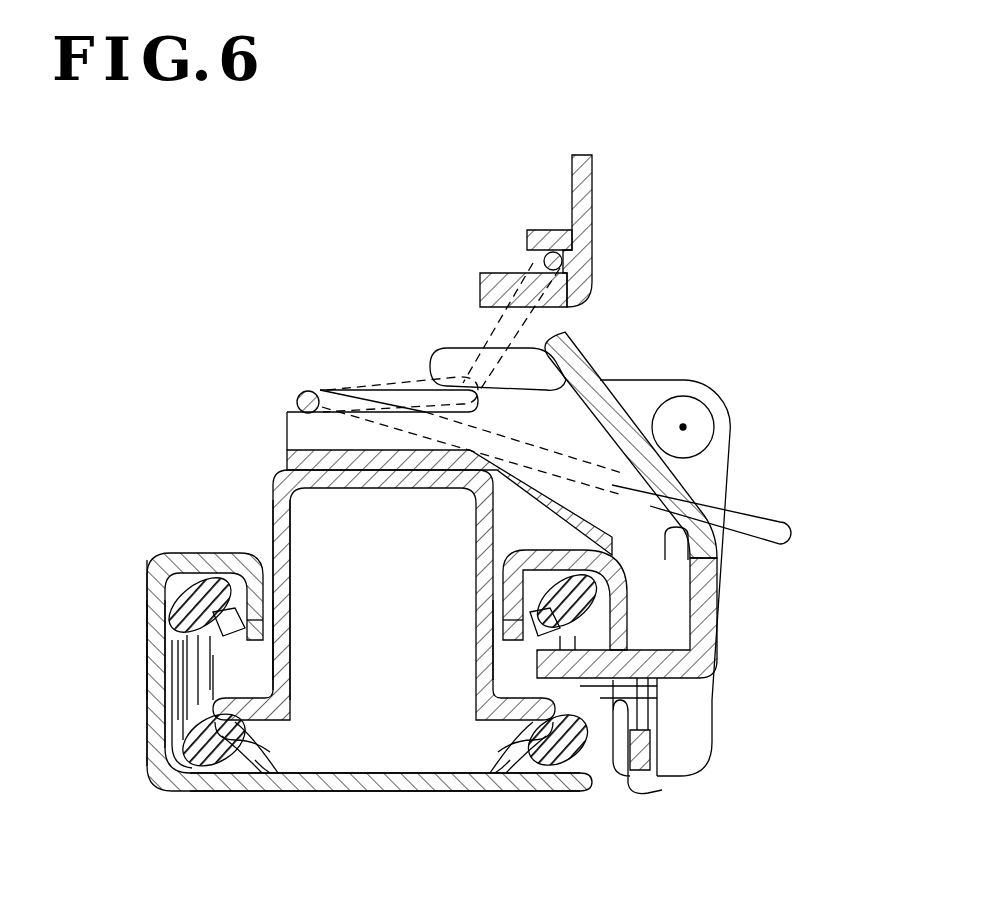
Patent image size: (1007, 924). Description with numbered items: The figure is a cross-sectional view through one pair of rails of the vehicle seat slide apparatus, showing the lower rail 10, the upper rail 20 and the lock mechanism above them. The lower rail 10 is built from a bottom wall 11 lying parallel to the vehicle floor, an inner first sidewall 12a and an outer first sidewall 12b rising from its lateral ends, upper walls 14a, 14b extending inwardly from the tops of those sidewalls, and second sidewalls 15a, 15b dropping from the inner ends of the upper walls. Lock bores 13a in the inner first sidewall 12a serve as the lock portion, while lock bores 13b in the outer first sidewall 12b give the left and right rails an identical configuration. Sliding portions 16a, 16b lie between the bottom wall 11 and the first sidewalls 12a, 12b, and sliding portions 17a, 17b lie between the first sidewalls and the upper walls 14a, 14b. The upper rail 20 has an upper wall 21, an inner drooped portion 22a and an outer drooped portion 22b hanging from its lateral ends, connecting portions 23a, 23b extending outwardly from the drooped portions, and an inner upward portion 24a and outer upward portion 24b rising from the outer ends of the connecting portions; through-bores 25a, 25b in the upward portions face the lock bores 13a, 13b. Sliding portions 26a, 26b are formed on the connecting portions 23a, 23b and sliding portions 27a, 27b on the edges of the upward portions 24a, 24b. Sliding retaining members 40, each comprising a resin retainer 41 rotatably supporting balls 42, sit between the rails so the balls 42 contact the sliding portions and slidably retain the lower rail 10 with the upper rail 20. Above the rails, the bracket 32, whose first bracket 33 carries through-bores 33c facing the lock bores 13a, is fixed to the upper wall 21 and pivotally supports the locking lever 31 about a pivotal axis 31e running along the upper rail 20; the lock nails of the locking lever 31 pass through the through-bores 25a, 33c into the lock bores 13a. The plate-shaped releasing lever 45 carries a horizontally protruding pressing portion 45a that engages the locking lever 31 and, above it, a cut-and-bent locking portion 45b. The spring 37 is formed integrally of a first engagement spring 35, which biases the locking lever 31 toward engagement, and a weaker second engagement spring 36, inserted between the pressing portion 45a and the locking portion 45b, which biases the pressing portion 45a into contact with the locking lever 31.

The lower rail 10 is at (278, 861).
The bottom wall 11 is at (408, 786).
The inner first sidewall 12a is at (624, 780).
The outer first sidewall 12b is at (165, 772).
The lock bores 13a is at (655, 782).
The lock bores 13b is at (170, 712).
The upper wall 14a is at (557, 566).
The upper wall 14b is at (203, 565).
The second sidewall 15a is at (505, 608).
The second sidewall 15b is at (258, 612).
The sliding portion 16a is at (575, 766).
The sliding portion 16b is at (200, 764).
The sliding portion 17a is at (710, 512).
The sliding portion 17b is at (195, 555).
The upper rail 20 is at (172, 452).
The upper wall 21 is at (335, 472).
The inner drooped portion 22a is at (478, 540).
The outer drooped portion 22b is at (288, 543).
The connecting portion 23a is at (540, 745).
The connecting portion 23b is at (262, 752).
The inner upward portion 24a is at (500, 640).
The outer upward portion 24b is at (262, 640).
The through-bores 25a is at (515, 704).
The through-bores 25b is at (255, 704).
The sliding portion 26a is at (502, 770).
The sliding portion 26b is at (270, 767).
The sliding portion 27a is at (600, 630).
The sliding portion 27b is at (200, 632).
The locking lever 31 is at (590, 360).
The pivotal axis 31e is at (683, 427).
The bracket 32 is at (705, 331).
The first bracket 33 is at (700, 710).
The through-bores 33c is at (700, 735).
The first engagement spring 35 is at (300, 390).
The second engagement spring 36 is at (535, 258).
The spring 37 is at (390, 196).
The sliding retaining member 40 is at (185, 685).
The retainer 41 is at (200, 598).
The balls 42 is at (215, 620).
The releasing lever 45 is at (593, 253).
The pressing portion 45a is at (492, 290).
The locking portion 45b is at (527, 240).